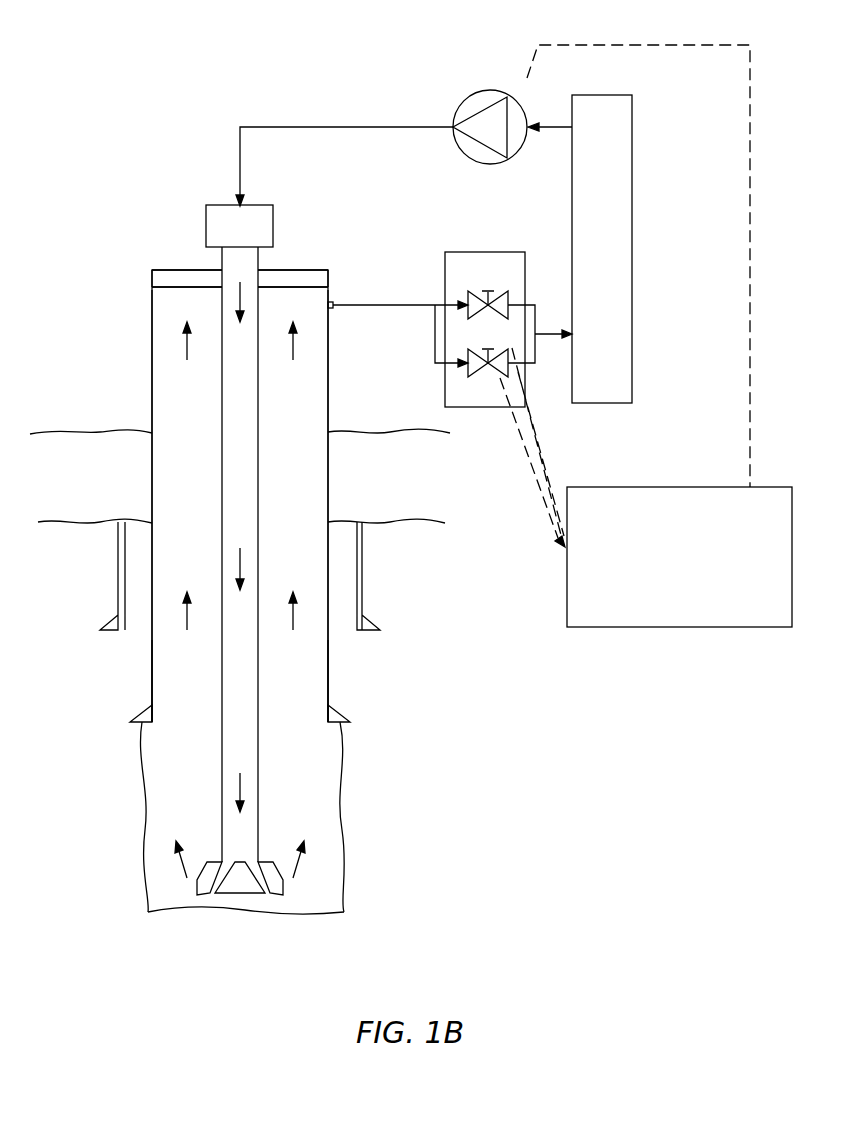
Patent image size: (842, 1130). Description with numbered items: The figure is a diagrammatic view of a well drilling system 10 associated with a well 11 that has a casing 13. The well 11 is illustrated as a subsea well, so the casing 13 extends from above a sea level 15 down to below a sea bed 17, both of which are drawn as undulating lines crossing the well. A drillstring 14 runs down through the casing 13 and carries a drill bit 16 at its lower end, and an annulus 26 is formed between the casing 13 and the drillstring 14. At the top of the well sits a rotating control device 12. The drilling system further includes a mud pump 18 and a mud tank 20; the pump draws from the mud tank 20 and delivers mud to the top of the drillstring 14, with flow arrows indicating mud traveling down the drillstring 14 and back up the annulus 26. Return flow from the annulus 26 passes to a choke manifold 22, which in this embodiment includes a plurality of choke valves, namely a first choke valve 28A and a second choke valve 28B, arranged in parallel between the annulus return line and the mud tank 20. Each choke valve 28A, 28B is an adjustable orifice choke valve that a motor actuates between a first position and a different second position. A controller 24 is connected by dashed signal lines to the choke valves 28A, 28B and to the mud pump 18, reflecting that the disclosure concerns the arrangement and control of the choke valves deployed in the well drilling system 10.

The well drilling system 10 is at (148, 117).
The well 11 is at (137, 410).
The rotating control device 12 is at (152, 272).
The casing 13 is at (152, 663).
The drillstring 14 is at (262, 457).
The sea level 15 is at (360, 430).
The drill bit 16 is at (270, 860).
The sea bed 17 is at (382, 525).
The mud pump 18 is at (466, 100).
The mud tank 20 is at (615, 182).
The choke manifold 22 is at (445, 272).
The controller 24 is at (667, 585).
The annulus 26 is at (280, 533).
The first choke valve 28A is at (500, 292).
The second choke valve 28B is at (483, 378).